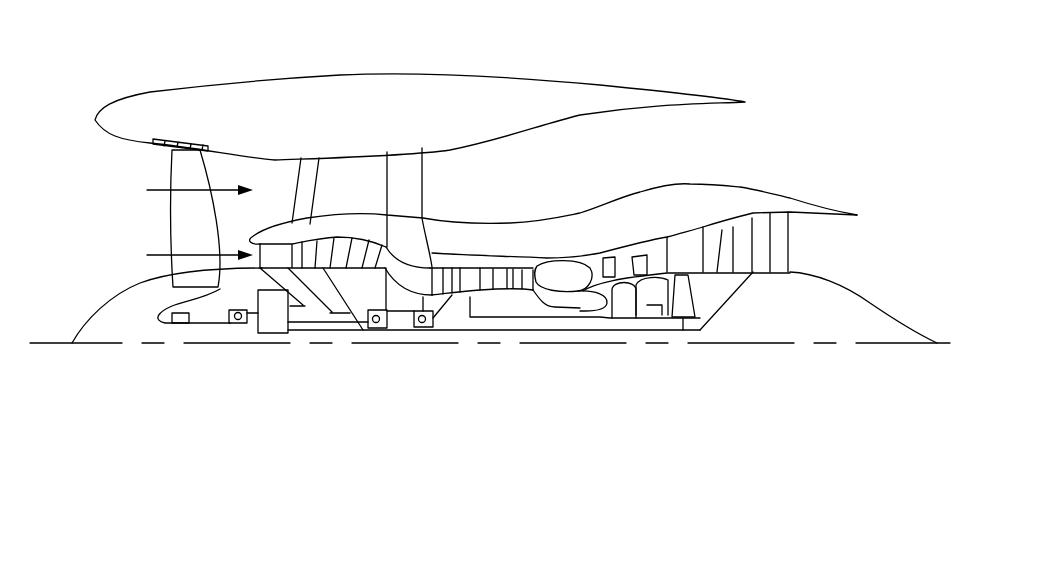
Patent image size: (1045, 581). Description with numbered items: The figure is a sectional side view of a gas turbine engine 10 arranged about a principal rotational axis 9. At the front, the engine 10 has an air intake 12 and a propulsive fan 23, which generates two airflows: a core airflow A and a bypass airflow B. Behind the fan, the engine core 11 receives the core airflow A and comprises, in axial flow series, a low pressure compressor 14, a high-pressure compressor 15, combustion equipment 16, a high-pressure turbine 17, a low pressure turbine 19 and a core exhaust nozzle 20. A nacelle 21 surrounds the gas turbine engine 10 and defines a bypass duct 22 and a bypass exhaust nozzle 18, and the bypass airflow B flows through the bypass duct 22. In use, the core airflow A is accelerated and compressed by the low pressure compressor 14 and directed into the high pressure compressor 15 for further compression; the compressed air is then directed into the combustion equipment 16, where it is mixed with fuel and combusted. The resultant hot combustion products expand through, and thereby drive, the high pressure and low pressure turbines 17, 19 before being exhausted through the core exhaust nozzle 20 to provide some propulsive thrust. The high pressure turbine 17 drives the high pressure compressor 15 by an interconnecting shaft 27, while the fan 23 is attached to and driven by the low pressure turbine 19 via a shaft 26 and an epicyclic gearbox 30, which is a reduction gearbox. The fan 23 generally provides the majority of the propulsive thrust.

The principal rotational axis 9 is at (647, 348).
The gas turbine engine 10 is at (168, 86).
The core 11 is at (541, 230).
The air intake 12 is at (116, 167).
The low pressure compressor 14 is at (342, 250).
The high-pressure compressor 15 is at (487, 280).
The combustion equipment 16 is at (563, 280).
The high-pressure turbine 17 is at (621, 258).
The bypass exhaust nozzle 18 is at (748, 140).
The low pressure turbine 19 is at (762, 232).
The core exhaust nozzle 20 is at (840, 243).
The nacelle 21 is at (400, 87).
The bypass duct 22 is at (688, 151).
The propulsive fan 23 is at (175, 222).
The shaft 26 is at (487, 333).
The interconnecting shaft 27 is at (514, 325).
The epicyclic gearbox 30 is at (267, 323).
The core airflow A is at (190, 255).
The bypass airflow B is at (190, 191).